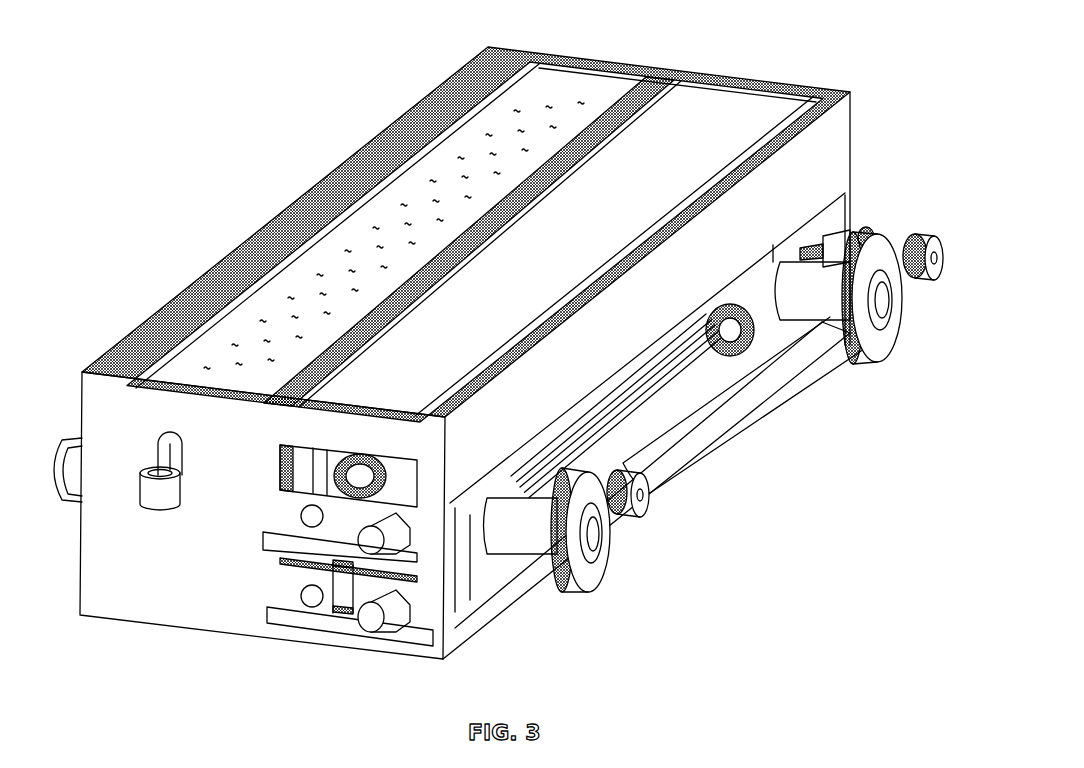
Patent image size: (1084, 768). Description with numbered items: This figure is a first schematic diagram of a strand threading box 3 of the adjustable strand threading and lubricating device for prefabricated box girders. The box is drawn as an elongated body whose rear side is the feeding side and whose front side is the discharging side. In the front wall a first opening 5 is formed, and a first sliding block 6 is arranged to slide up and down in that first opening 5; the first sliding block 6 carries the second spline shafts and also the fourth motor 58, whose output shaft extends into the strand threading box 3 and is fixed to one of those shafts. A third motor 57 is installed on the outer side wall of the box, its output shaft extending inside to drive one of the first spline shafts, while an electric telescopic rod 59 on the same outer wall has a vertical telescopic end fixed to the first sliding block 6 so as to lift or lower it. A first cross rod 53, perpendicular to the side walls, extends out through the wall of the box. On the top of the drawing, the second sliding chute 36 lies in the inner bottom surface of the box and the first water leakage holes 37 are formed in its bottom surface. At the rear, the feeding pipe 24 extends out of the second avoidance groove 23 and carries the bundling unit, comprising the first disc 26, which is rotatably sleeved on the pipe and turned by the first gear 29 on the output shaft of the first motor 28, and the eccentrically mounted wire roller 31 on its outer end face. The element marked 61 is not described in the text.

The strand threading box 3 is at (240, 243).
The first opening 5 is at (300, 463).
The first sliding block 6 is at (297, 537).
The second avoidance groove 23 is at (672, 413).
The feeding pipe 24 is at (527, 533).
The first disc 26 is at (883, 343).
The first motor 28 is at (850, 232).
The first gear 29 is at (867, 233).
The wire roller 31 is at (913, 235).
The second sliding chute 36 is at (610, 93).
The first water leakage hole 37 is at (552, 92).
The first cross rod 53 is at (162, 490).
The third motor 57 is at (367, 620).
The fourth motor 58 is at (377, 507).
The electric telescopic rod 59 is at (337, 600).
The top rim 61 is at (820, 140).